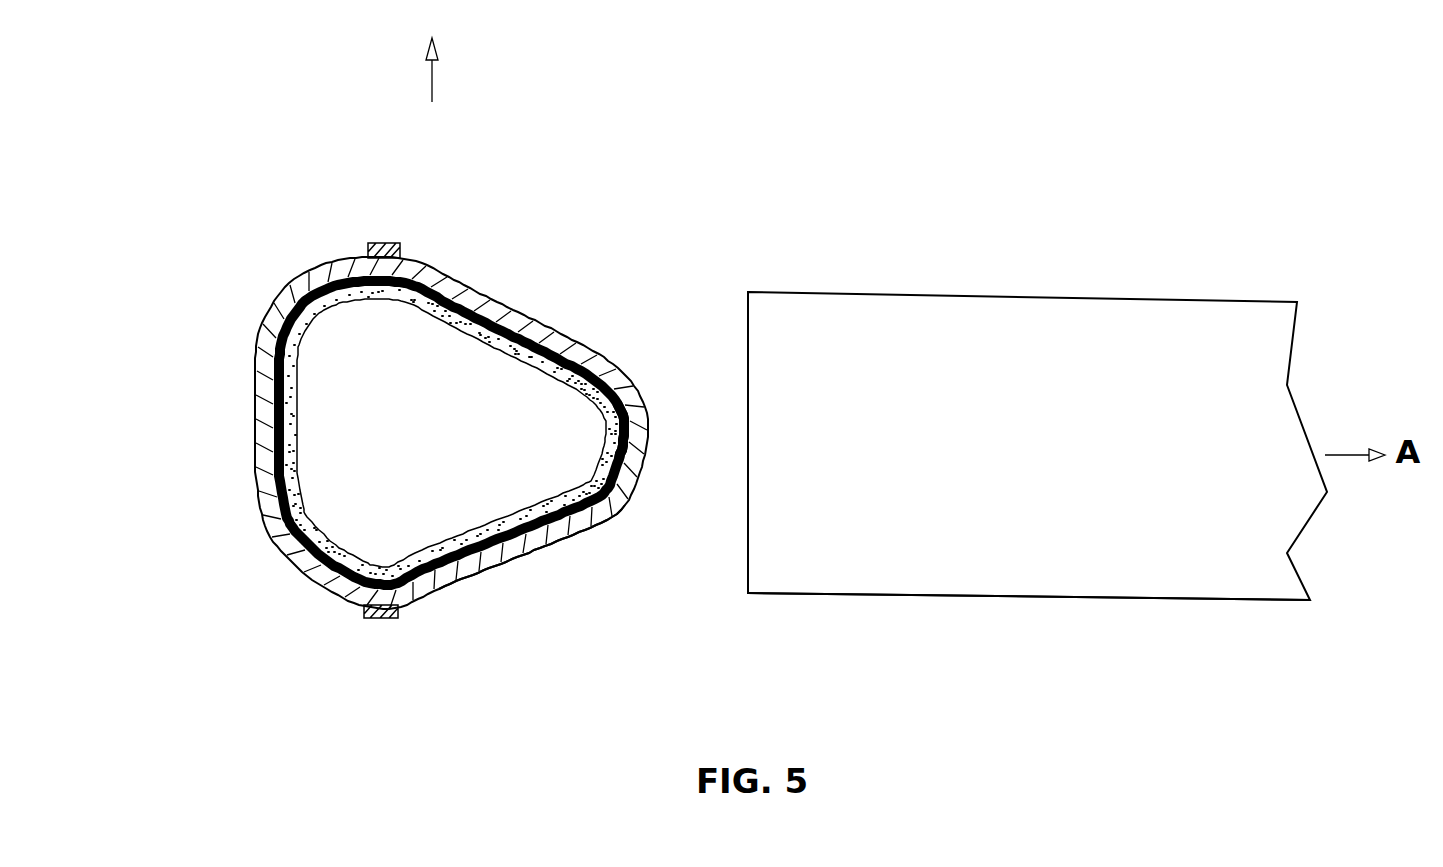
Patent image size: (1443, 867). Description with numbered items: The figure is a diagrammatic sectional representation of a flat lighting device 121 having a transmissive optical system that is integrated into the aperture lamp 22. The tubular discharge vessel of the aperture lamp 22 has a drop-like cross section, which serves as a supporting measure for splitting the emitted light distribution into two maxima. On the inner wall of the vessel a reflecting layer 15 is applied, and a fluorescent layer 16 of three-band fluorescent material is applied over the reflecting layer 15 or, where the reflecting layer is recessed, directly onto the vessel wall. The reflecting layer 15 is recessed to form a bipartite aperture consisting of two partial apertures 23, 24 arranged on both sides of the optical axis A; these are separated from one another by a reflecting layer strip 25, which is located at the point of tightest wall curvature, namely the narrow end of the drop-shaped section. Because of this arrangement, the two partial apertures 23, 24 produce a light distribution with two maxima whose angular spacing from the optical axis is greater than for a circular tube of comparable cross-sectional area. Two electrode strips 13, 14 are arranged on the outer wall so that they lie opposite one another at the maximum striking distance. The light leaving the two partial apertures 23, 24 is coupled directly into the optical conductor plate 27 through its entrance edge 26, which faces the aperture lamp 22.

The electrode 13 is at (382, 243).
The electrode 14 is at (382, 618).
The reflecting layer 15 is at (507, 530).
The fluorescent layer 16 is at (473, 325).
The aperture lamp 22 is at (270, 283).
The partial aperture 23 is at (630, 347).
The partial aperture 24 is at (606, 526).
The reflecting layer strip 25 is at (628, 432).
The entrance edge 26 is at (748, 358).
The optical conductor plate 27 is at (1045, 640).
The flat lighting device 121 is at (1037, 213).